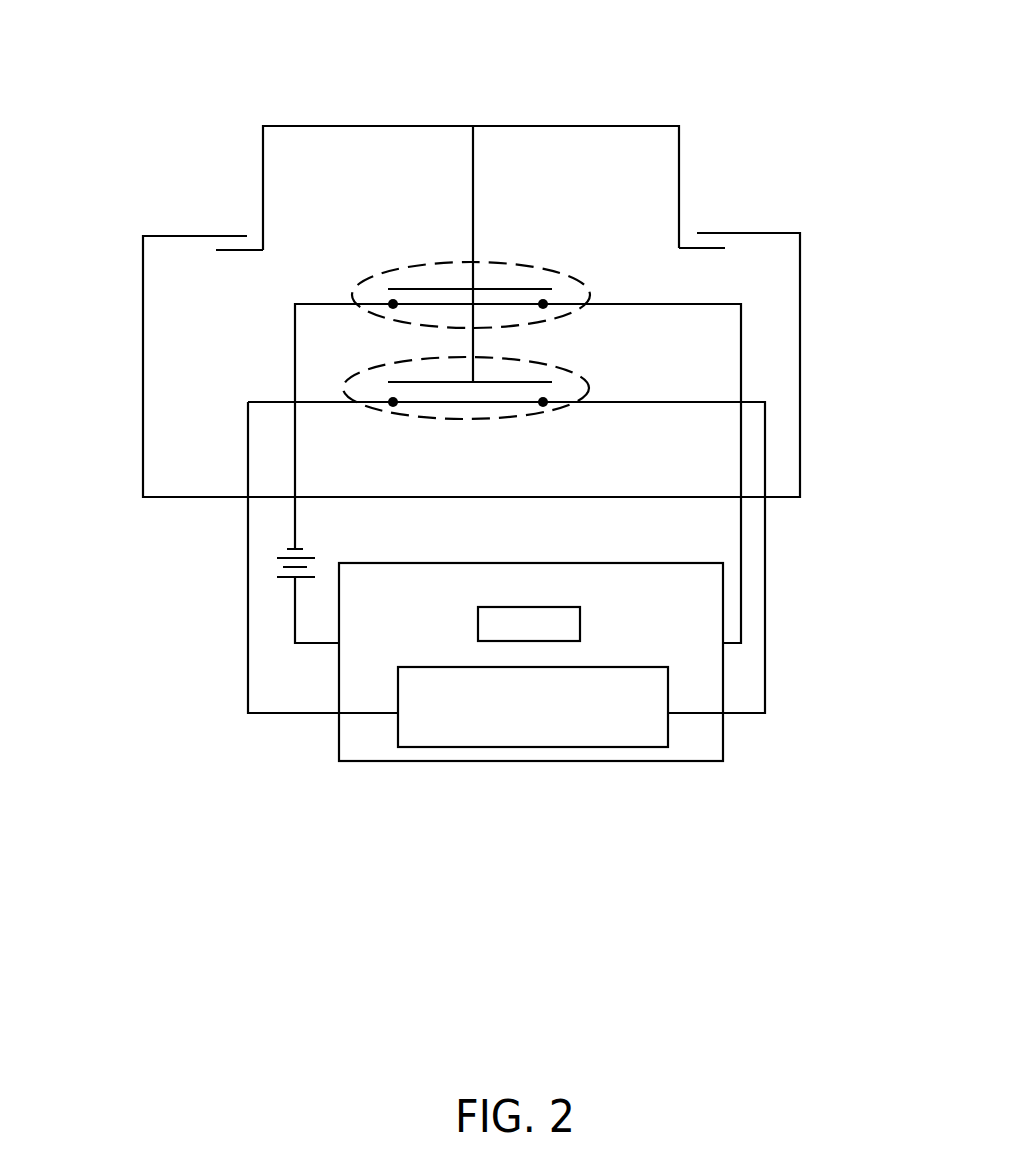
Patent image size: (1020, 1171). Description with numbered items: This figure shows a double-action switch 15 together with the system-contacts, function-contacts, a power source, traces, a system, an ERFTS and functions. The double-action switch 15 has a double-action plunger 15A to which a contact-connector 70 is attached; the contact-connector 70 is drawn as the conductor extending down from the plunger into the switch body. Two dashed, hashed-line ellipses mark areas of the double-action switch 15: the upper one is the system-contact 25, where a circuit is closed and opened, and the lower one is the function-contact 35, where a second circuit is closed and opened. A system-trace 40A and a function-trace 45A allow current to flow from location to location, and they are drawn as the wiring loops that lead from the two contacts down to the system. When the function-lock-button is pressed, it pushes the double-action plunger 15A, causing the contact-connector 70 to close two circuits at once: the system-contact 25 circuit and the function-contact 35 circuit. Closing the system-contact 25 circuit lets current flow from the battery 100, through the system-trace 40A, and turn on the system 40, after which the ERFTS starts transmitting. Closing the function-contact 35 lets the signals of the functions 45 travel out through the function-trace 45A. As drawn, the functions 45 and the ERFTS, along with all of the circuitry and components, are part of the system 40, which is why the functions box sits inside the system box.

The double-action switch 15 is at (189, 168).
The double-action plunger 15A is at (313, 126).
The contact-connector 70 is at (473, 180).
The system-contact 25 is at (572, 275).
The function-contact 35 is at (572, 368).
The system-trace 40A is at (295, 387).
The function-trace 45A is at (248, 548).
The battery 100 is at (261, 592).
The system 40 is at (456, 762).
The functions 45 is at (630, 747).